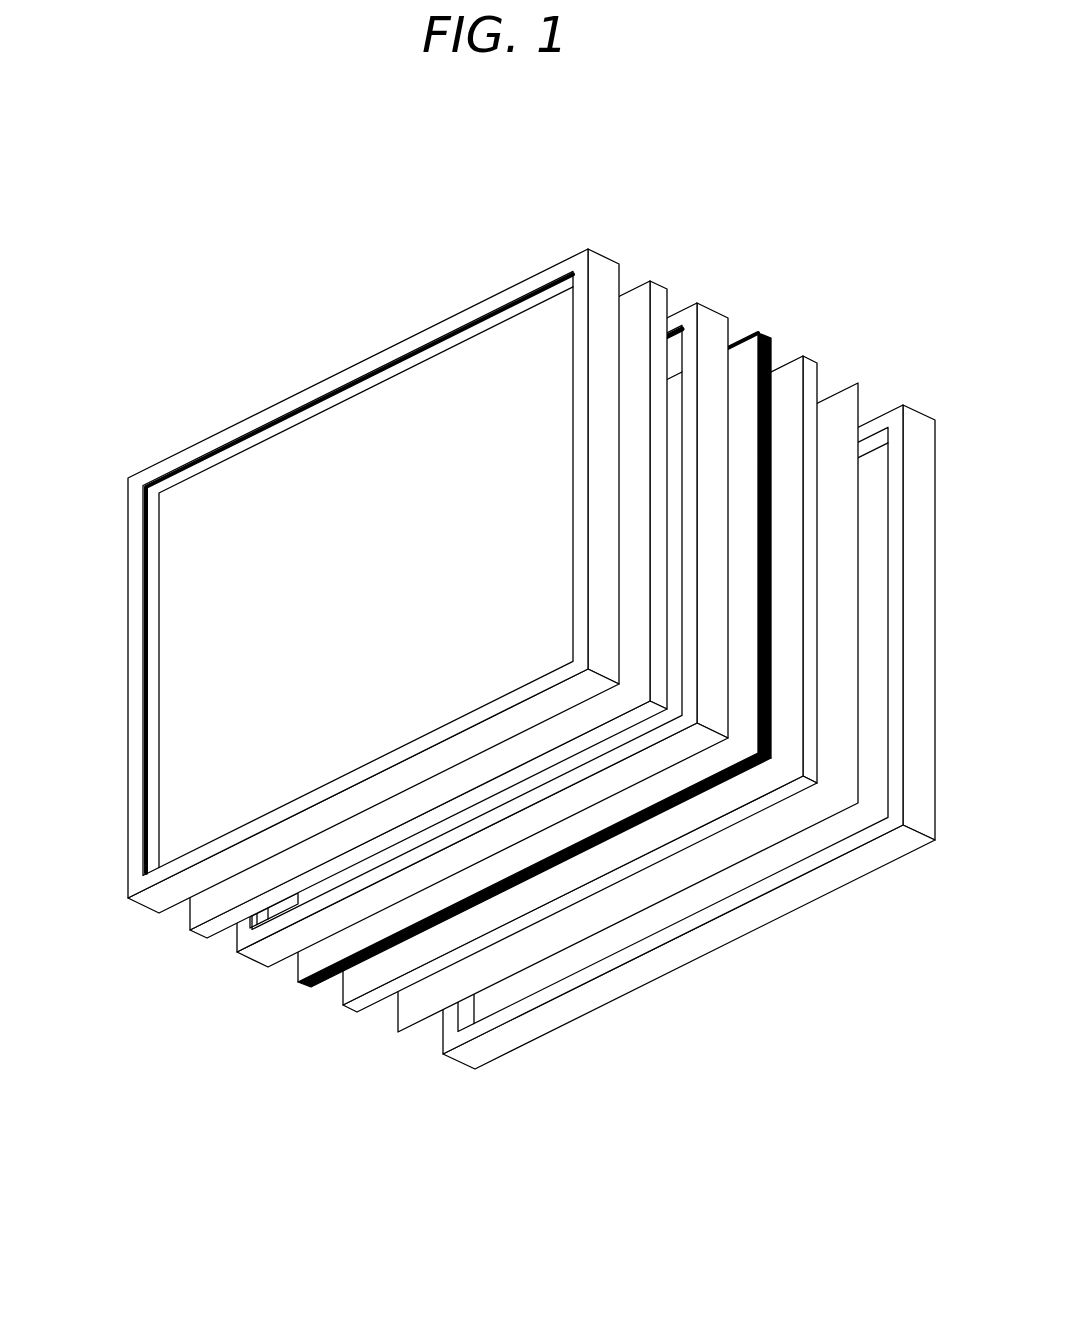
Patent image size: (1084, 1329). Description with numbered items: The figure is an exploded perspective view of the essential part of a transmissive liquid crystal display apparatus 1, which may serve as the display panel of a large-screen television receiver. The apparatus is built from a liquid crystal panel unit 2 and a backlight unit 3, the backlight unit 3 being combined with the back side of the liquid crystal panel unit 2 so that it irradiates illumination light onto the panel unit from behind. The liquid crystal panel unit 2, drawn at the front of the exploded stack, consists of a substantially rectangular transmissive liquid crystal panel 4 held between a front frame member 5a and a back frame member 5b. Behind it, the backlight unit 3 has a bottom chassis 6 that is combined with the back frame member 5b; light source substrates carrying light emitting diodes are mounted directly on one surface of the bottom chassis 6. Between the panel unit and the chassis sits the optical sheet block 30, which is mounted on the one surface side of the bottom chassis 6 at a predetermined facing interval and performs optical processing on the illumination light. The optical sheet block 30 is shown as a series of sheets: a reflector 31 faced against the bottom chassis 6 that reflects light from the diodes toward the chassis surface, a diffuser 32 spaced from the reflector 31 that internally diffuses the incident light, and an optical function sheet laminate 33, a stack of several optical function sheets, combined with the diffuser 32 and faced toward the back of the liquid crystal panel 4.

The liquid crystal display apparatus 1 is at (567, 176).
The liquid crystal panel unit 2 is at (414, 674).
The backlight unit 3 is at (606, 770).
The liquid crystal panel 4 is at (199, 932).
The front frame member 5a is at (365, 627).
The back frame member 5b is at (238, 950).
The bottom chassis 6 is at (480, 1062).
The optical sheet block 30 is at (570, 746).
The reflector 31 is at (426, 998).
The diffuser 32 is at (344, 1003).
The optical function sheet laminate 33 is at (299, 983).